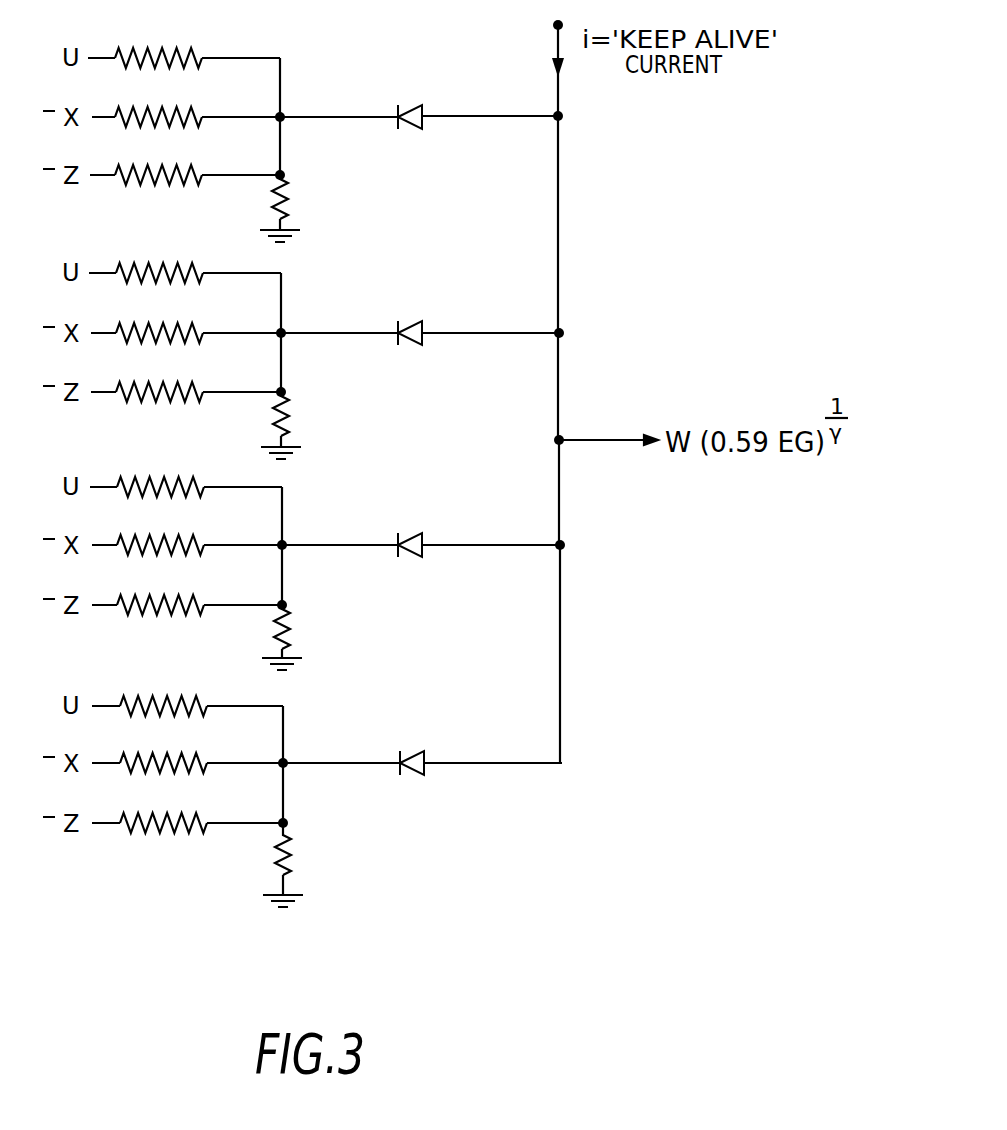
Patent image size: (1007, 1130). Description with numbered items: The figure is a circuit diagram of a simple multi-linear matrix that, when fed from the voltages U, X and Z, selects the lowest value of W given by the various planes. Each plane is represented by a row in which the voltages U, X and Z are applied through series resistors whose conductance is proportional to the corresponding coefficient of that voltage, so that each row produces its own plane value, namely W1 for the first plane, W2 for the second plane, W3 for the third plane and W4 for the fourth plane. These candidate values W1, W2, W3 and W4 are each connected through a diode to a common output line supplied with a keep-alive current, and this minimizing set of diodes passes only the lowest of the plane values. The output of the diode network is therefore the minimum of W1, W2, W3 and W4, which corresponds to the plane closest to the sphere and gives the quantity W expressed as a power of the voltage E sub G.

The first plane output value W1 is at (421, 137).
The second plane output value W2 is at (422, 353).
The third plane output value W3 is at (423, 565).
The fourth plane output value W4 is at (422, 783).